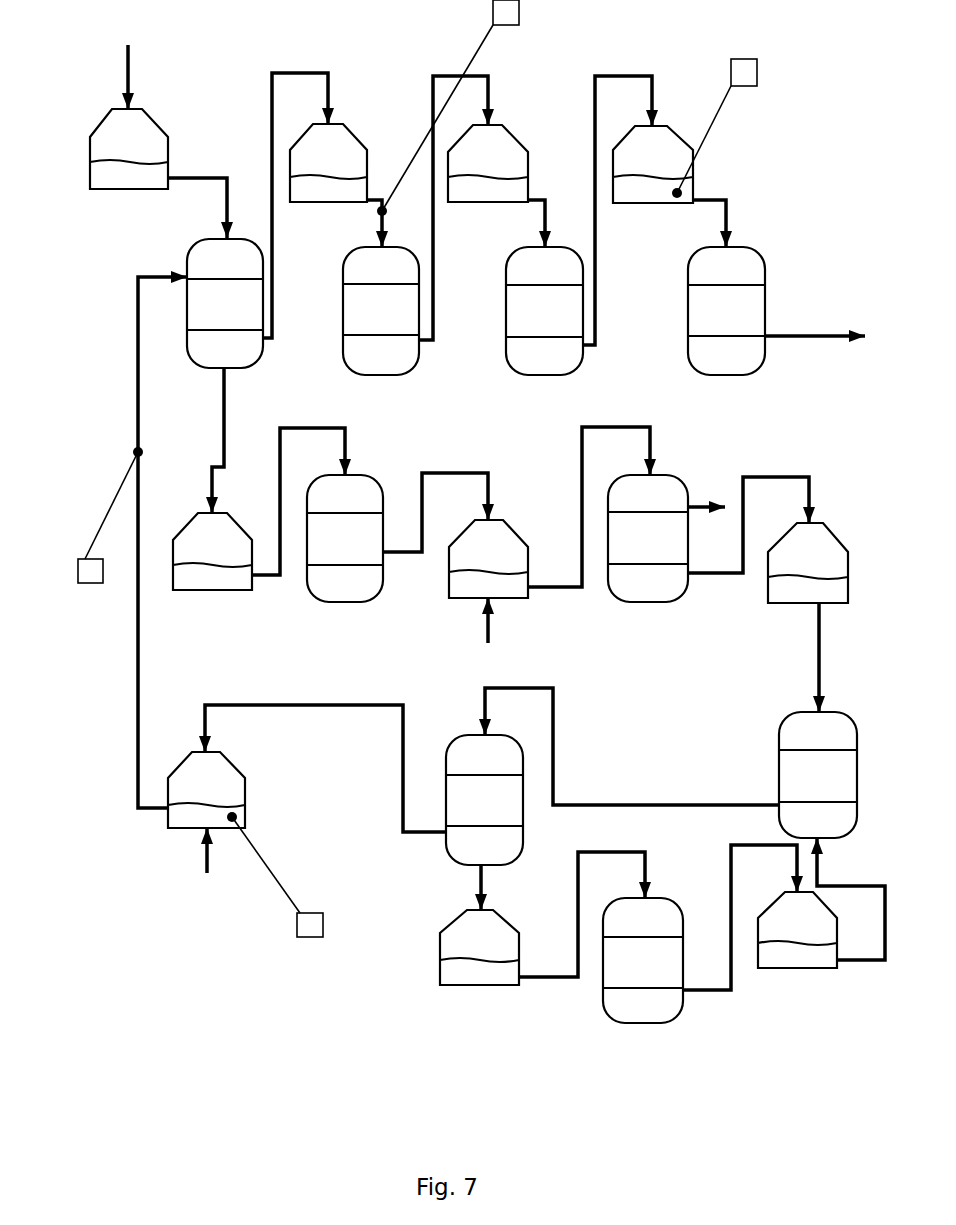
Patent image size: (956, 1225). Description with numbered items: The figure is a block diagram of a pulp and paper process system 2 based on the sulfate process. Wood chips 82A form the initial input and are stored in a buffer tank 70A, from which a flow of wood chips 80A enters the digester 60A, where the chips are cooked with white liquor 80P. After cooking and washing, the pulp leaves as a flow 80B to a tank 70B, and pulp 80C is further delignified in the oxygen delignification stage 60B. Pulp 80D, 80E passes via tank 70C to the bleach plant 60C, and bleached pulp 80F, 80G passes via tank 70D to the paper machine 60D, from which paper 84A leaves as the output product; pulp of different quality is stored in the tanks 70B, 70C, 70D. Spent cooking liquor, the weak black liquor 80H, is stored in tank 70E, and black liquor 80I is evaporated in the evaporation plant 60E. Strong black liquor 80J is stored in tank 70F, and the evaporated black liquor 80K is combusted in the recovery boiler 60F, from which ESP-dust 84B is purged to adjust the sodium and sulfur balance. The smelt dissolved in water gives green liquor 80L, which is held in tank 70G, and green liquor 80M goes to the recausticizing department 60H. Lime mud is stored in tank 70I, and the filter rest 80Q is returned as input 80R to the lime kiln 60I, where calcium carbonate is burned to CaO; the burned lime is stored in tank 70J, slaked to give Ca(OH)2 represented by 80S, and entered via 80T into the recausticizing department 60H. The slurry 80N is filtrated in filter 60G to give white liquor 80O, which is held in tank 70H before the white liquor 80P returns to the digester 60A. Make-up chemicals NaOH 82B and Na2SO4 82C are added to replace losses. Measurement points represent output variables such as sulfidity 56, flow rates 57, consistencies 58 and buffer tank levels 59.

The pulp and paper process system 2 is at (123, 1063).
The process output variable measurement 56 is at (307, 937).
The flow rate measurement 57 is at (92, 583).
The consistency measurement 58 is at (519, 22).
The buffer tank level measurement 59 is at (757, 78).
The digester 60A is at (207, 370).
The oxygen delignification stage 60B is at (363, 310).
The bleach plant 60C is at (520, 360).
The paper machine 60D is at (702, 360).
The evaporation plant 60E is at (343, 602).
The recovery boiler 60F is at (630, 603).
The filter 60G is at (458, 855).
The recausticizing department 60H is at (782, 742).
The lime kiln 60I is at (608, 1010).
The wood chip buffer tank 70A is at (97, 190).
The pulp buffer tank 70B is at (320, 203).
The pulp buffer tank 70C is at (485, 203).
The pulp buffer tank 70D is at (648, 205).
The weak black liquor tank 70E is at (213, 593).
The strong black liquor tank 70F is at (457, 600).
The green liquor tank 70G is at (775, 605).
The white liquor tank 70H is at (175, 830).
The lime mud tank 70I is at (443, 988).
The burned lime tank 70J is at (765, 970).
The flow of wood chips 80A is at (212, 177).
The washed pulp flow 80B is at (270, 92).
The pulp 80C is at (380, 203).
The pulp 80D is at (432, 100).
The pulp 80E is at (543, 200).
The bleached pulp 80F is at (593, 98).
The bleached pulp 80G is at (727, 197).
The weak black liquor 80H is at (227, 385).
The black liquor 80I is at (337, 425).
The strong black liquor 80J is at (425, 472).
The evaporated black liquor 80K is at (580, 498).
The green liquor 80L is at (695, 578).
The green liquor 80M is at (817, 680).
The slurry 80N is at (632, 805).
The white liquor 80O is at (325, 707).
The white liquor 80P is at (138, 310).
The filter residue 80Q is at (470, 890).
The lime kiln input 80R is at (575, 925).
The slaked lime Ca(OH)2 80S is at (728, 890).
The Ca(OH)2 feed 80T is at (870, 965).
The wood chips 82A is at (127, 72).
The NaOH make-up 82B is at (207, 872).
The Na2SO4 make-up 82C is at (490, 627).
The paper 84A is at (830, 330).
The ESP-dust 84B is at (697, 492).